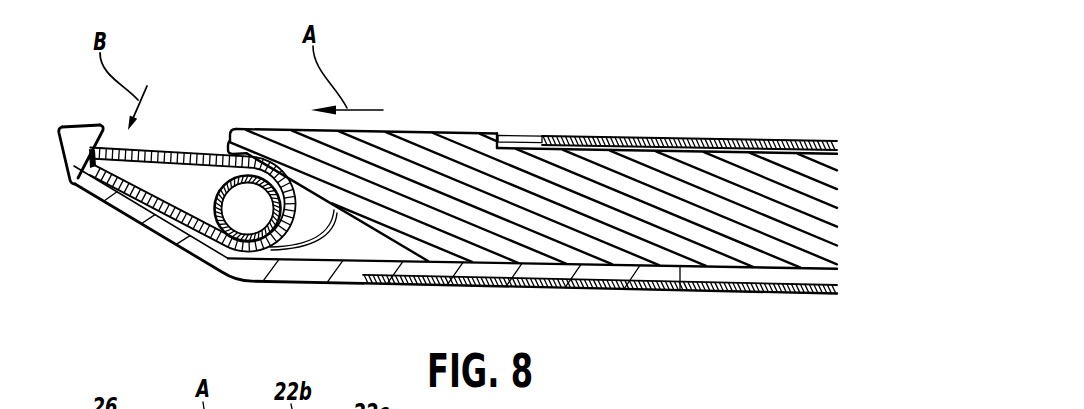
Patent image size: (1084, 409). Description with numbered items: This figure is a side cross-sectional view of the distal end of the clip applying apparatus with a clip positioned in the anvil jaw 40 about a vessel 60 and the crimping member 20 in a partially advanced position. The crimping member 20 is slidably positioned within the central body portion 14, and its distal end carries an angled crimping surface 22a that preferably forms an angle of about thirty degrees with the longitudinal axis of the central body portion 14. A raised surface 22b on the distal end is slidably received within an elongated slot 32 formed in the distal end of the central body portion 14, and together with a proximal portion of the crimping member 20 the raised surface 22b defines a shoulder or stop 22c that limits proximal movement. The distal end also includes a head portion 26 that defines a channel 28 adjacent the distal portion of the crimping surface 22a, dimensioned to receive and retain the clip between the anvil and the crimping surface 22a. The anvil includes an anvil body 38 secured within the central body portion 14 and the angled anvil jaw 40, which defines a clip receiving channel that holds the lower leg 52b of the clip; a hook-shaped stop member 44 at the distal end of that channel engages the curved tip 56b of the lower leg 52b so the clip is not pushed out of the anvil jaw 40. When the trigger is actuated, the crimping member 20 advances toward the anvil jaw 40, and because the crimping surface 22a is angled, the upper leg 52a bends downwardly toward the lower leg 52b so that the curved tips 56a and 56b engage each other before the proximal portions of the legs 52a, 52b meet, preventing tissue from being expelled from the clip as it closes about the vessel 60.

The central body portion 14 is at (637, 137).
The crimping member 20 is at (574, 155).
The angled crimping surface 22a is at (362, 224).
The raised surface 22b is at (432, 138).
The stop 22c is at (500, 138).
The head portion 26 is at (255, 130).
The channel 28 is at (232, 148).
The elongated slot 32 is at (523, 138).
The anvil body 38 is at (473, 270).
The anvil jaw 40 is at (118, 205).
The stop member 44 is at (72, 140).
The upper leg 52a is at (168, 150).
The lower leg 52b is at (172, 236).
The curved tip 56a is at (103, 130).
The curved tip 56b is at (93, 203).
The vessel 60 is at (244, 258).